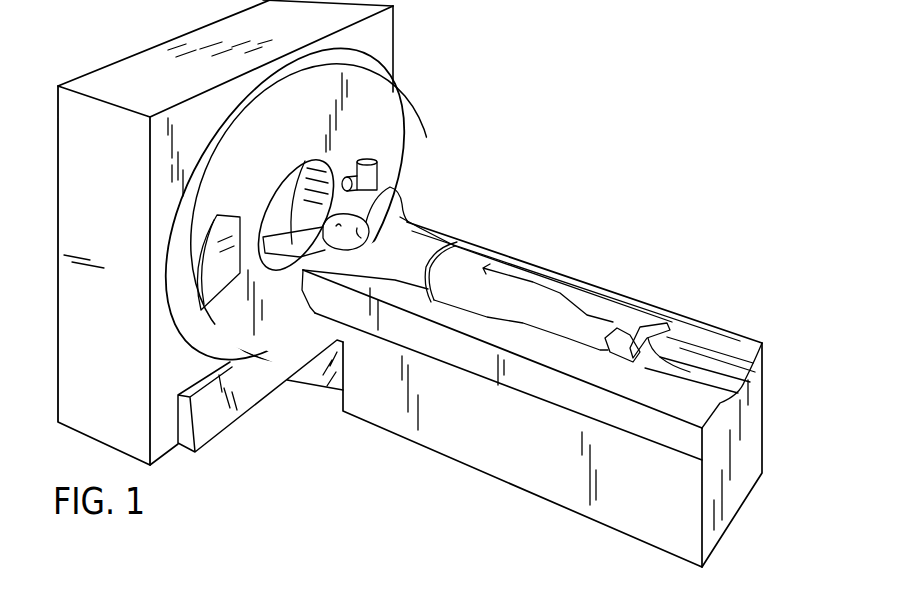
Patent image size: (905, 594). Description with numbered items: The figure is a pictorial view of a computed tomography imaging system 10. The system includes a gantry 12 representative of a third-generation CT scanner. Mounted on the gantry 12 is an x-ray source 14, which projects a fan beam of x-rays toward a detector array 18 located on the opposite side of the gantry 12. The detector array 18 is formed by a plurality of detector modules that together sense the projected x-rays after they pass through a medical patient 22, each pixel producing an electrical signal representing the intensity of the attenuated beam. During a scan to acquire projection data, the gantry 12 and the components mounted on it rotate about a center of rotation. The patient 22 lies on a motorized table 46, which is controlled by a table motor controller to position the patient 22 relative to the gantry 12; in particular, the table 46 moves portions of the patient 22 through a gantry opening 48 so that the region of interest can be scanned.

The computed tomography imaging system 10 is at (505, 110).
The gantry 12 is at (384, 128).
The x-ray source 14 is at (381, 176).
The detector array 18 is at (217, 288).
The medical patient 22 is at (432, 240).
The motorized table 46 is at (512, 470).
The gantry opening 48 is at (284, 200).